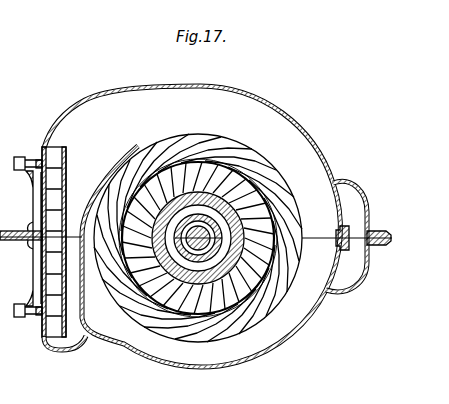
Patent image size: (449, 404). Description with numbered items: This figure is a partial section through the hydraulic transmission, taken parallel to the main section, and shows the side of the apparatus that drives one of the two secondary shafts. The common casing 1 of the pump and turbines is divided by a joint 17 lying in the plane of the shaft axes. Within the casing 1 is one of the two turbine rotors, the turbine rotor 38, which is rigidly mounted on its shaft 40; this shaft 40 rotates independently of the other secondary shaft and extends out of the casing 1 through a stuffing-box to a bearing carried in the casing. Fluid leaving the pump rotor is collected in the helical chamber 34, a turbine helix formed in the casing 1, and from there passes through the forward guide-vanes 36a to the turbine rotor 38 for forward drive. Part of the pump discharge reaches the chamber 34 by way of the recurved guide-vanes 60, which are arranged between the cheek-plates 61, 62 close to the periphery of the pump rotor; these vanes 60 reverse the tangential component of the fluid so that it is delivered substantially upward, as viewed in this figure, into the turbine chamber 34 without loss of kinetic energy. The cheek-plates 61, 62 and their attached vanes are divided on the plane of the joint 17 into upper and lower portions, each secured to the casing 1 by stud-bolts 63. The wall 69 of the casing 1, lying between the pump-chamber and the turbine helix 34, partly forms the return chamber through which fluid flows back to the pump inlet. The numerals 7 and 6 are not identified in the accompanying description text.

The casing 1 is at (244, 97).
The helical chamber 34 is at (375, 289).
The forward guide-vanes 36a is at (224, 139).
The turbine rotor 38 is at (256, 166).
The shaft 40 is at (222, 212).
The joint 17 is at (308, 238).
The guide-vanes 60 is at (53, 160).
The cheek-plate 61 is at (64, 168).
The cheek-plate 62 is at (43, 186).
The stud-bolts 63 is at (17, 160).
The wall 69 is at (86, 312).
The arm 7 is at (21, 253).
The support 6 is at (37, 268).